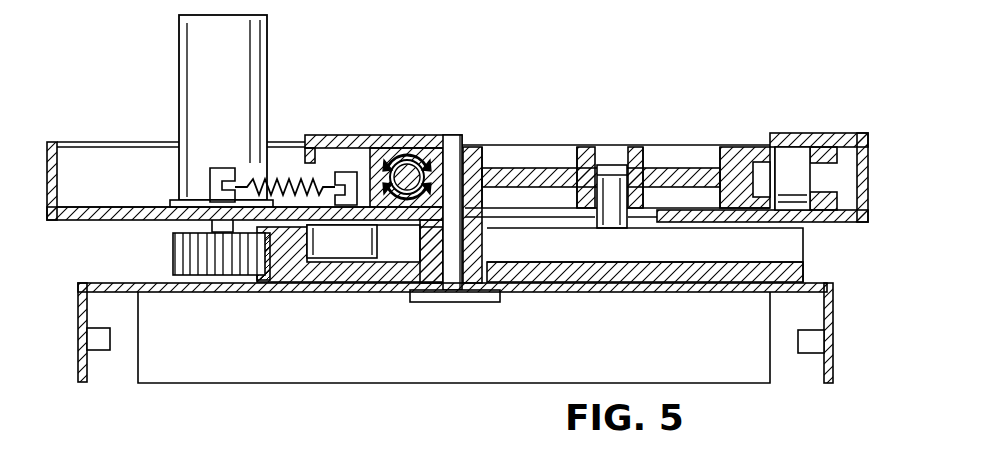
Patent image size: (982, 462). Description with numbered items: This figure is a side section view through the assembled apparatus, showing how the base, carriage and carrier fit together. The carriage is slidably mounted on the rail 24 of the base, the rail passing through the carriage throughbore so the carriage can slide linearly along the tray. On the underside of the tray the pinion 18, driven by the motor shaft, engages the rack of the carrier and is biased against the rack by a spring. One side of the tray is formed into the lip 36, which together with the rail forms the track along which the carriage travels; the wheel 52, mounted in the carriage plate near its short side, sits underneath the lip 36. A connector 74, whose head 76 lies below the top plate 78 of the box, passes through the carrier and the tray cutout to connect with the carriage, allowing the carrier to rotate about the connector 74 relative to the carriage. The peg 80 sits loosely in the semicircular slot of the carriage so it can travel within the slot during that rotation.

The pinion 18 is at (187, 250).
The rail 24 is at (407, 160).
The lip 36 is at (817, 137).
The wheel 52 is at (793, 195).
The connector 74 is at (423, 303).
The head 76 is at (457, 297).
The top plate 78 is at (227, 292).
The peg 80 is at (612, 187).